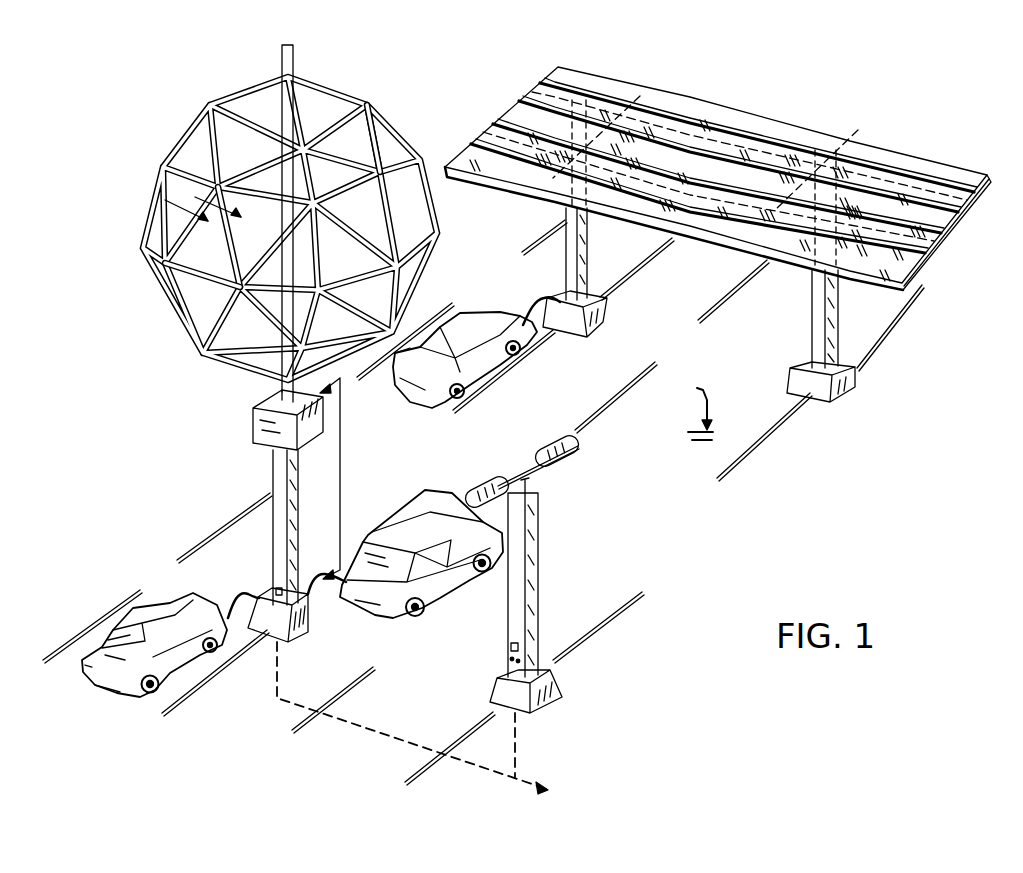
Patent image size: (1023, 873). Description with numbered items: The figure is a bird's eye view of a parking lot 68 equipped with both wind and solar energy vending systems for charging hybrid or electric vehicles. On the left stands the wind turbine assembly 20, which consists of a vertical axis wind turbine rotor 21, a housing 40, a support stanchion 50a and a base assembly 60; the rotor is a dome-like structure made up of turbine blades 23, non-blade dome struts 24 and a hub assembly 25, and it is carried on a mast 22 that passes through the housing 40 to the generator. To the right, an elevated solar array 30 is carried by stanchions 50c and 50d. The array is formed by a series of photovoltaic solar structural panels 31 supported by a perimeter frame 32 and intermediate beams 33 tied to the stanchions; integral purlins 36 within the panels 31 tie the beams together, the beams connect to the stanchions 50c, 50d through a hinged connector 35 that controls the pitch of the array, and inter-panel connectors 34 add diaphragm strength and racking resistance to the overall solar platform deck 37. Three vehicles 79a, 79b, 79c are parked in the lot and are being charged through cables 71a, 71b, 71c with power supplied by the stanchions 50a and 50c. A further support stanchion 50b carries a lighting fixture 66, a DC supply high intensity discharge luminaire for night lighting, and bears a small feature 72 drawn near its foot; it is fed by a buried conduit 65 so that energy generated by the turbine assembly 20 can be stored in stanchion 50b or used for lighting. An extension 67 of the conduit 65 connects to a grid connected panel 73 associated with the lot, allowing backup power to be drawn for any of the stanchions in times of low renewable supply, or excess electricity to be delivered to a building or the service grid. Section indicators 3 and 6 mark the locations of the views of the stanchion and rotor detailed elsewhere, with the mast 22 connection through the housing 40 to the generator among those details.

The wind turbine assembly 20 is at (251, 217).
The wind turbine rotor 21 is at (178, 139).
The mast 22 is at (300, 55).
The turbine blades 23 is at (232, 250).
The non-blade dome struts 24 is at (197, 272).
The hub assembly 25 is at (382, 153).
The solar array 30 is at (721, 174).
The photovoltaic solar structural panels 31 is at (708, 112).
The perimeter frame 32 is at (935, 258).
The intermediate beams 33 is at (850, 138).
The inter-panel connectors 34 is at (497, 150).
The hinged connector 35 is at (552, 73).
The integral purlins 36 is at (960, 205).
The solar platform deck 37 is at (777, 127).
The housing 40 is at (252, 418).
The support stanchion 50a is at (272, 511).
The support stanchion 50b is at (527, 608).
The support stanchion 50c is at (568, 243).
The support stanchion 50d is at (813, 324).
The base assembly 60 is at (263, 625).
The buried conduit 65 is at (400, 727).
The lighting fixture 66 is at (567, 461).
The extension of conduit 67 is at (547, 774).
The parking lot 68 is at (688, 406).
The cable 71a is at (249, 590).
The cable 71b is at (313, 585).
The cable 71c is at (536, 301).
The charging outlet 72 is at (509, 646).
The grid connected panel 73 is at (558, 795).
The vehicle 79a is at (130, 616).
The vehicle 79b is at (430, 515).
The vehicle 79c is at (415, 381).
The section line 3 is at (332, 478).
The section line 6 is at (203, 203).